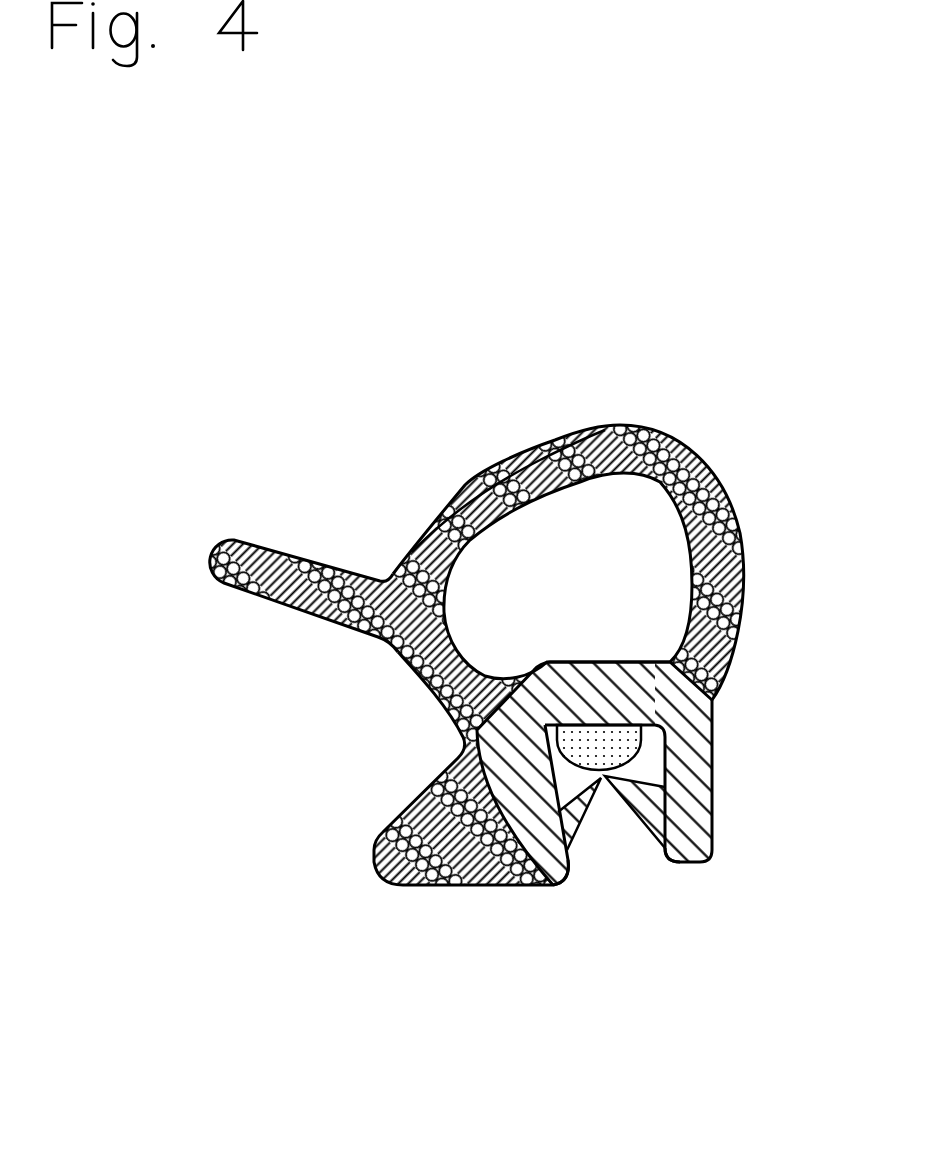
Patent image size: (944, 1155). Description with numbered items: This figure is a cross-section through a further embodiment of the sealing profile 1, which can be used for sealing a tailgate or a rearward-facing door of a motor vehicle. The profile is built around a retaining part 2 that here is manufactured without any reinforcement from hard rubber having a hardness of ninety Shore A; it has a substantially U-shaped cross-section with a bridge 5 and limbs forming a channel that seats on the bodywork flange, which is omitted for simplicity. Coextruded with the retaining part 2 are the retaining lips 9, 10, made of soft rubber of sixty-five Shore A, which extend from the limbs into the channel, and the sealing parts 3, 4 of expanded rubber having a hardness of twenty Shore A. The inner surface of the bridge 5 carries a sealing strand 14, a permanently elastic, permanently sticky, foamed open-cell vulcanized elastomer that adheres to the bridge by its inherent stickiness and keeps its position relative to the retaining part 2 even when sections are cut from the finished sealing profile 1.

The sealing profile 1 is at (502, 695).
The retaining part 2 is at (722, 871).
The sealing part 3 is at (701, 433).
The sealing part 4 is at (383, 897).
The bridge 5 is at (563, 662).
The retaining lip 9 is at (632, 828).
The retaining lip 10 is at (590, 832).
The sealing strand 14 is at (623, 765).